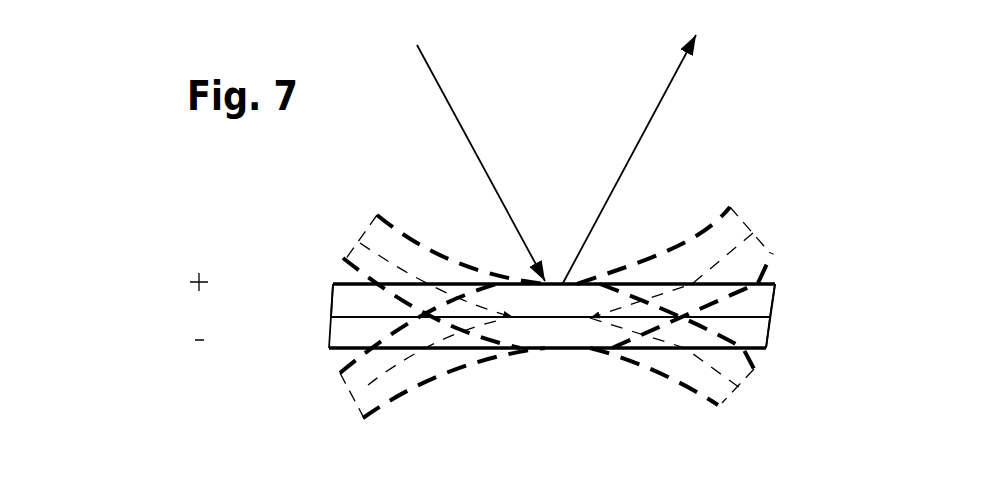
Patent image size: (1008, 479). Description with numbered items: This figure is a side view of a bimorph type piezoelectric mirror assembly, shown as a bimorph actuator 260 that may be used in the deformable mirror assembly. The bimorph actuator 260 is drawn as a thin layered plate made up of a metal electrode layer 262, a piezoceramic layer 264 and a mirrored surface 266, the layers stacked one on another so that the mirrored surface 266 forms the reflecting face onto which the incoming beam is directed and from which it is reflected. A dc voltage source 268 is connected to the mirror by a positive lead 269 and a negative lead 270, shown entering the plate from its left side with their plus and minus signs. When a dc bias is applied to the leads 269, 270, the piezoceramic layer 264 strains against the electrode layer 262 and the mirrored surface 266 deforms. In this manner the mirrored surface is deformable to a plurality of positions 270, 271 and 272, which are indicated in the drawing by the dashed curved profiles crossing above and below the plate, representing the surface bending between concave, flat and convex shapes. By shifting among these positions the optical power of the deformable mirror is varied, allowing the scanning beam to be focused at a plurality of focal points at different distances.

The bimorph actuator 260 is at (788, 231).
The metal electrode layer 262 is at (777, 298).
The piezoceramic layer 264 is at (771, 338).
The mirrored surface 266 is at (776, 284).
The dc voltage source 268 is at (130, 306).
The positive lead 269 is at (332, 294).
The negative lead 270 is at (195, 340).
The mirror position 271 is at (509, 312).
The mirror position 272 is at (416, 275).